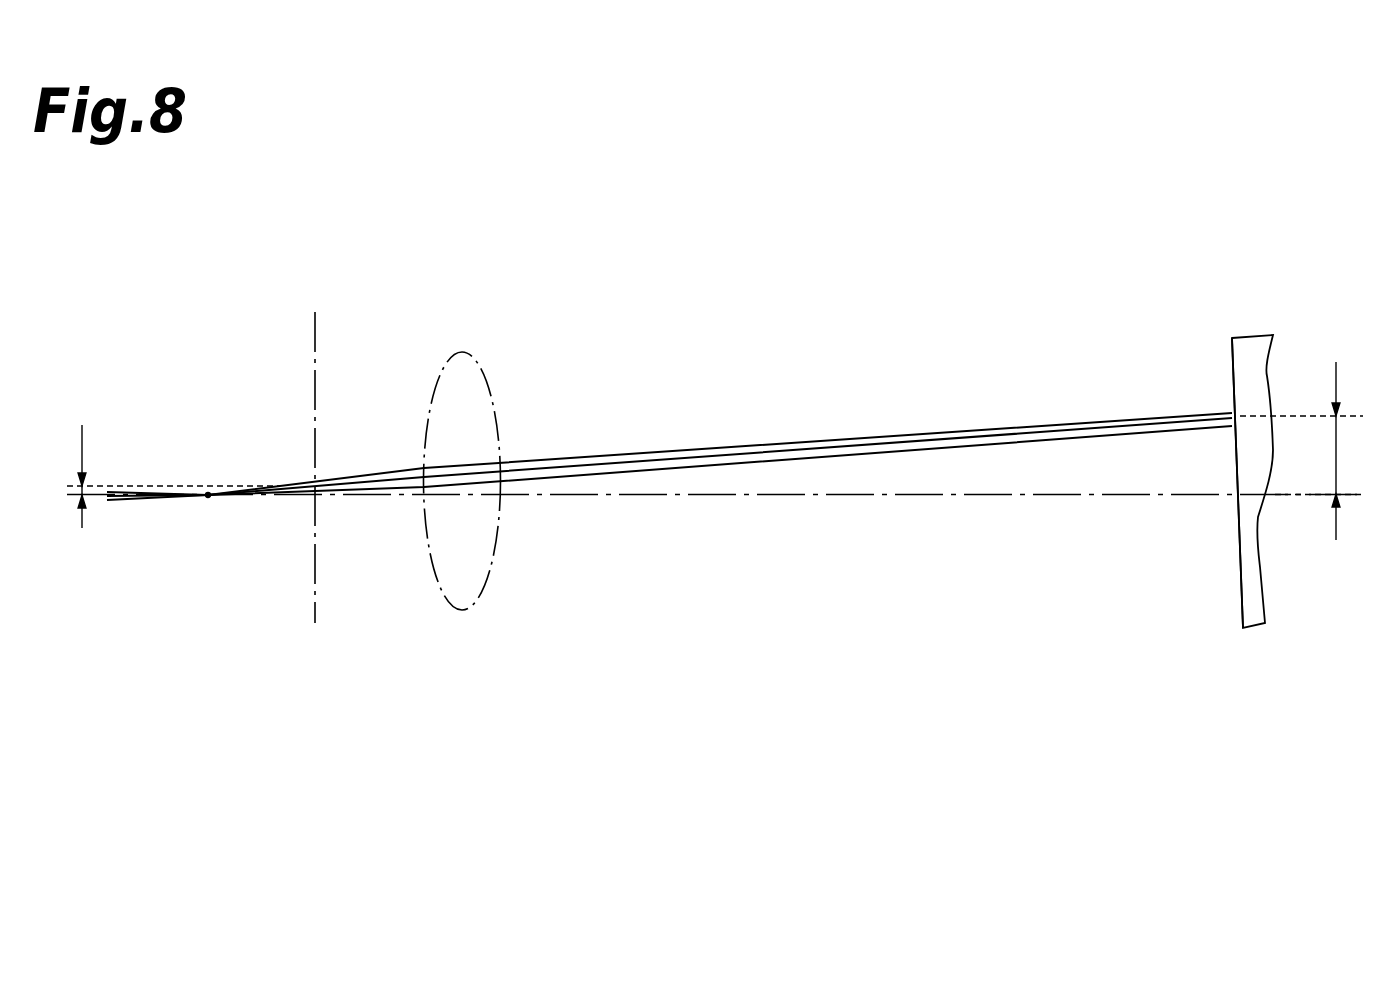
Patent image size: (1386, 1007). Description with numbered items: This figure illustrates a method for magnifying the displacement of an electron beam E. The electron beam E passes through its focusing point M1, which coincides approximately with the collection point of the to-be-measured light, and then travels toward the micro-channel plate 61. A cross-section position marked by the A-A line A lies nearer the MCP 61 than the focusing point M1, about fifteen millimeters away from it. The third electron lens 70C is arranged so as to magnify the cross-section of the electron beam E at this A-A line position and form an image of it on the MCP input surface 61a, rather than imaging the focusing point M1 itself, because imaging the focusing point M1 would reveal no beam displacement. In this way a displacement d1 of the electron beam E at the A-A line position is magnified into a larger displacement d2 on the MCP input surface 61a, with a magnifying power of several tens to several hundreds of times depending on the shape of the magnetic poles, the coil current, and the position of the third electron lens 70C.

The micro-channel plate 61 is at (1257, 350).
The MCP input surface 61a is at (1232, 366).
The third electron lens 70C is at (500, 417).
The electron beam E is at (811, 441).
The focusing point M1 is at (208, 497).
The A-A line position A is at (314, 471).
The displacement at the A-A line position d1 is at (173, 476).
The displacement on the MCP input surface d2 is at (1310, 451).